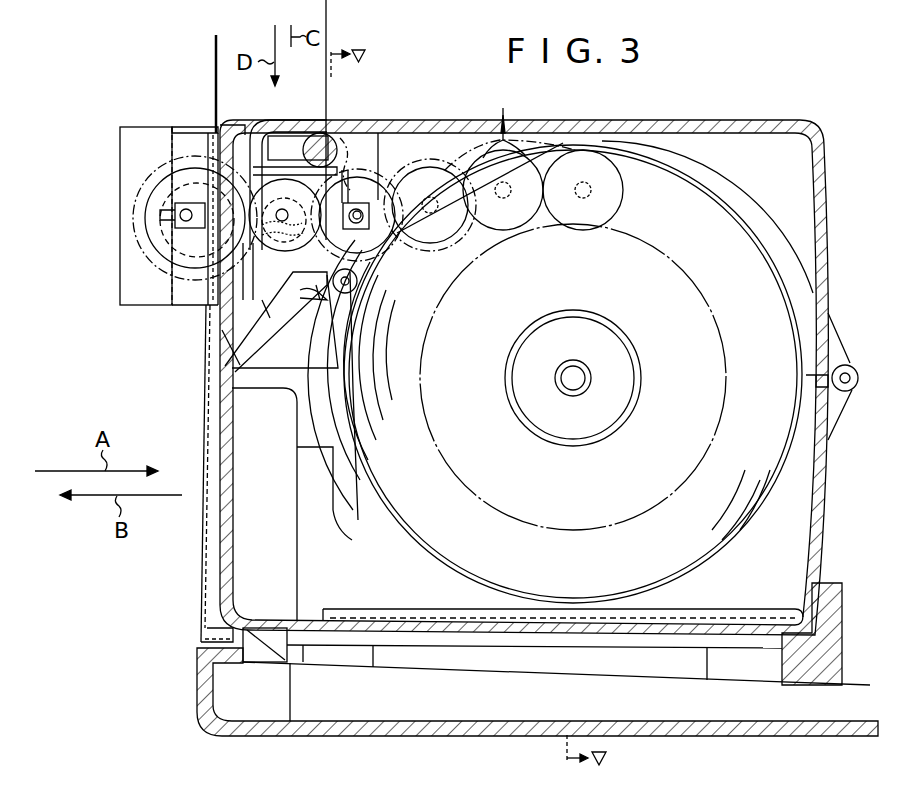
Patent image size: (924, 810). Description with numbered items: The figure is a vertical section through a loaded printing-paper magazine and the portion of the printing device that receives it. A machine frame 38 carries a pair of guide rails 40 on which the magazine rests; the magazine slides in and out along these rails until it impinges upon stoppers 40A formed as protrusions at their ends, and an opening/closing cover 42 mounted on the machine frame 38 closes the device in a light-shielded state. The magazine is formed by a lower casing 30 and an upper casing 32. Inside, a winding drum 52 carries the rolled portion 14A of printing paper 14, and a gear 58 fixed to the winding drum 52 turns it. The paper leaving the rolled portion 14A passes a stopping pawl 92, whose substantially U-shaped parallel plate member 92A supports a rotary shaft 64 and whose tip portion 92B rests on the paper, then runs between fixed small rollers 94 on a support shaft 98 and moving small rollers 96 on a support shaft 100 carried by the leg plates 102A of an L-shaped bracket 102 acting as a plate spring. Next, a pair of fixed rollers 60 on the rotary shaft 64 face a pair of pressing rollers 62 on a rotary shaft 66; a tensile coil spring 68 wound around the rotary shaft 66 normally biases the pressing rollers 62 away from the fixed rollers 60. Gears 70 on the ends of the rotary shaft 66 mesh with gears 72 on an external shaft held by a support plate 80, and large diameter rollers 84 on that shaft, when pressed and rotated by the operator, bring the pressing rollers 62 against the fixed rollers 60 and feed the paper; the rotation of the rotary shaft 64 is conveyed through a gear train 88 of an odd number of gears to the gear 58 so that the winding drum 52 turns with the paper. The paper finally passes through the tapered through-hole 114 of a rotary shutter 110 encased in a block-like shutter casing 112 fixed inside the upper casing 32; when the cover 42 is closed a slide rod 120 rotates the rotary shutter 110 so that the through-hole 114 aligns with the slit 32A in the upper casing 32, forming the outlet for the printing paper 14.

The printing paper 14 is at (328, 40).
The rolled portion 14A is at (708, 188).
The lower casing 30 is at (818, 528).
The upper casing 32 is at (828, 260).
The slit 32A is at (327, 130).
The machine frame 38 is at (487, 737).
The guide rails 40 is at (598, 648).
The stoppers 40A is at (846, 608).
The opening/closing cover 42 is at (200, 604).
The winding drum 52 is at (610, 320).
The gear 58 is at (678, 240).
The fixed rollers 60 is at (436, 158).
The pressing rollers 62 is at (244, 290).
The rotary shaft 64 is at (402, 215).
The rotary shaft 66 is at (285, 215).
The tensile coil spring 68 is at (284, 226).
The gears 70 is at (335, 275).
The gears 72 is at (357, 198).
The support plate 80 is at (195, 218).
The large diameter rollers 84 is at (140, 170).
The gear train 88 is at (534, 154).
The stopping pawl 92 is at (386, 200).
The parallel plate member 92A is at (355, 228).
The tip portion 92B is at (355, 168).
The fixed small rollers 94 is at (380, 302).
The moving small rollers 96 is at (320, 300).
The support shaft 98 is at (375, 285).
The support shaft 100 is at (300, 298).
The bracket 102 is at (224, 378).
The leg plates 102A is at (268, 318).
The rotary shutter 110 is at (305, 140).
The shutter casing 112 is at (360, 140).
The through-hole 114 is at (298, 148).
The slide rod 120 is at (226, 140).